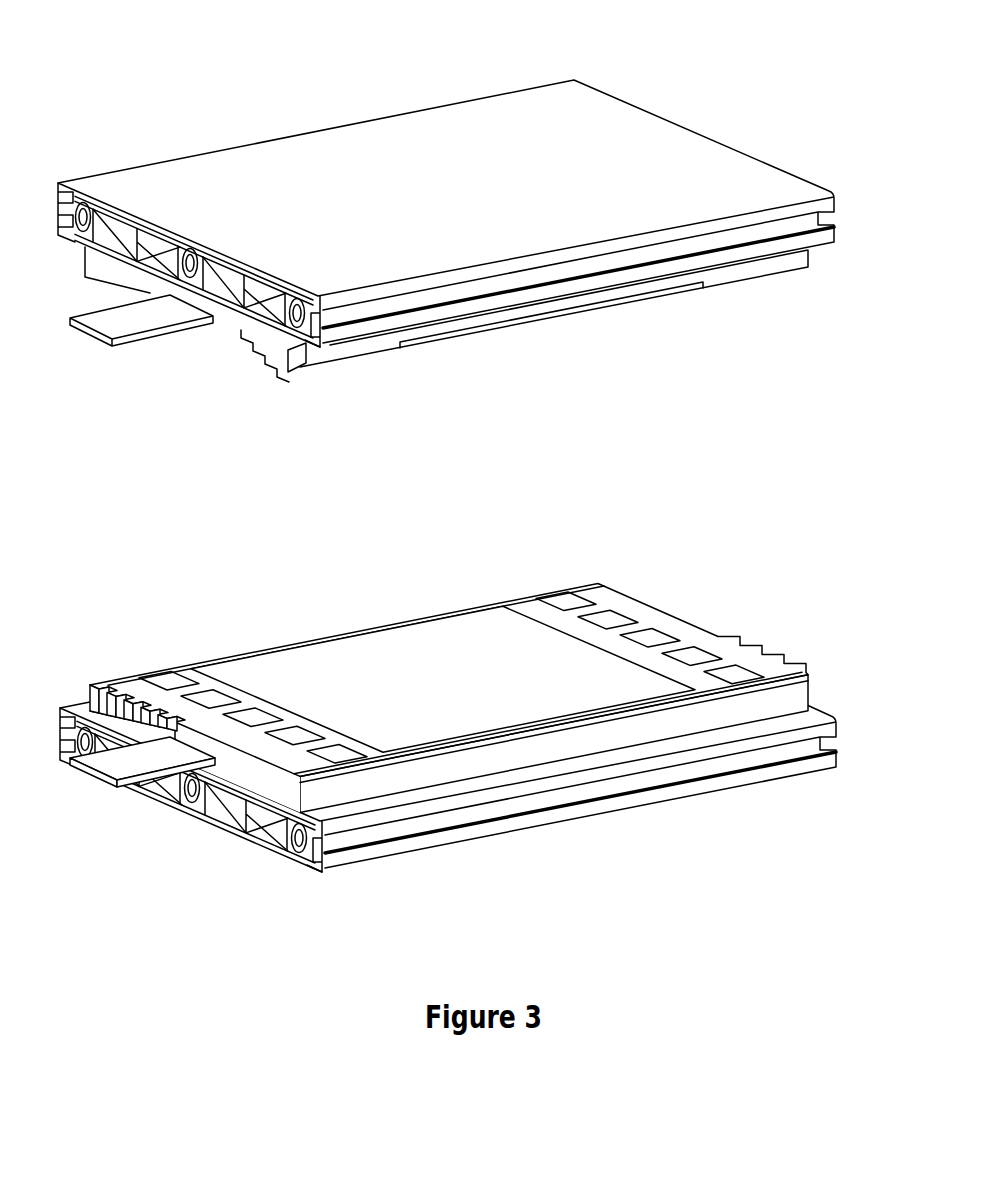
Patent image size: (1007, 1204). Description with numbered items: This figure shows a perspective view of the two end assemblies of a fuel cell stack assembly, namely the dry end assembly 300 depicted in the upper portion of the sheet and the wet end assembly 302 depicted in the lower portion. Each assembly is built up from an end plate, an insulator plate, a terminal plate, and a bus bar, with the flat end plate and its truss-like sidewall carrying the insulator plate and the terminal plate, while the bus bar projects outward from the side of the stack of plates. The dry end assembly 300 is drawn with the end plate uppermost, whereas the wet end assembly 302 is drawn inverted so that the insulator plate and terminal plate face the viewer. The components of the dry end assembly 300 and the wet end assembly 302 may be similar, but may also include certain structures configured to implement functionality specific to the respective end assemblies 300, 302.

The dry end assembly 300 is at (446, 222).
The wet end assembly 302 is at (448, 715).